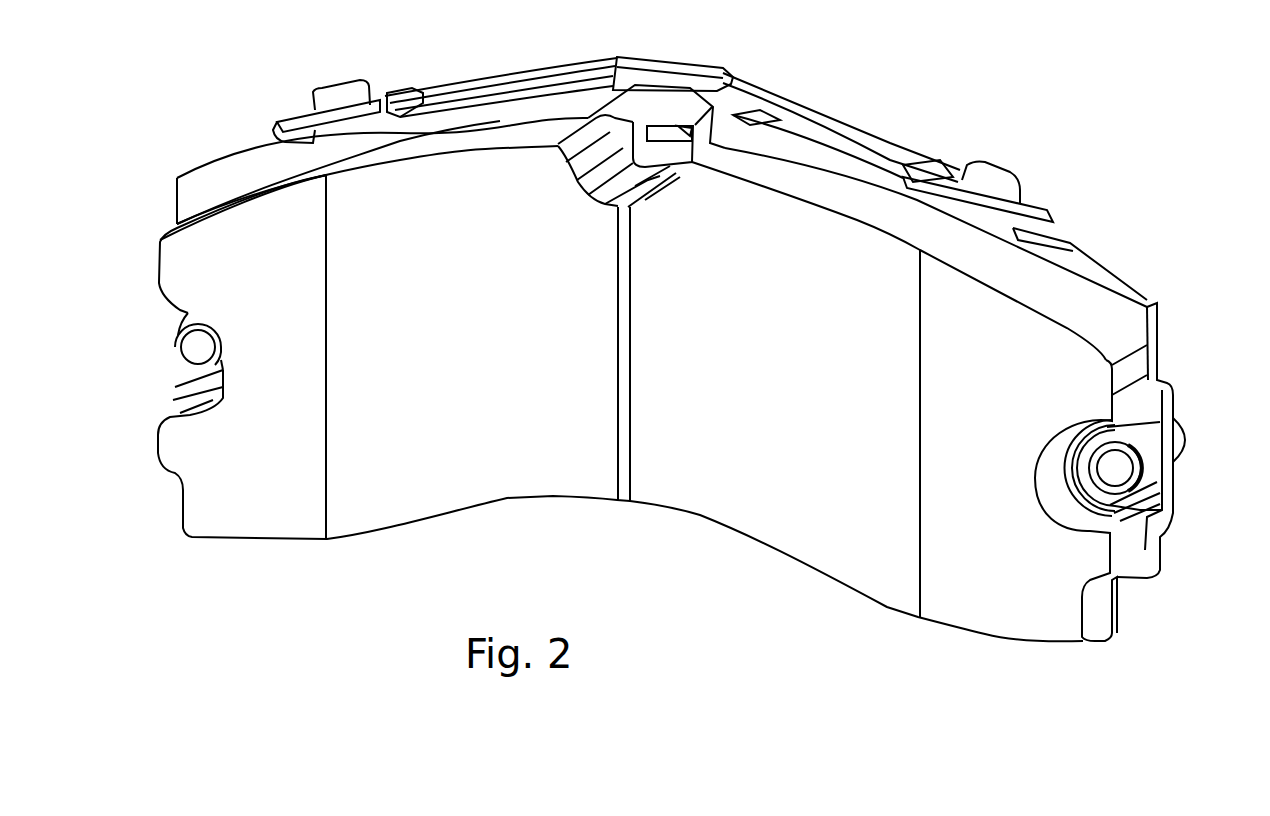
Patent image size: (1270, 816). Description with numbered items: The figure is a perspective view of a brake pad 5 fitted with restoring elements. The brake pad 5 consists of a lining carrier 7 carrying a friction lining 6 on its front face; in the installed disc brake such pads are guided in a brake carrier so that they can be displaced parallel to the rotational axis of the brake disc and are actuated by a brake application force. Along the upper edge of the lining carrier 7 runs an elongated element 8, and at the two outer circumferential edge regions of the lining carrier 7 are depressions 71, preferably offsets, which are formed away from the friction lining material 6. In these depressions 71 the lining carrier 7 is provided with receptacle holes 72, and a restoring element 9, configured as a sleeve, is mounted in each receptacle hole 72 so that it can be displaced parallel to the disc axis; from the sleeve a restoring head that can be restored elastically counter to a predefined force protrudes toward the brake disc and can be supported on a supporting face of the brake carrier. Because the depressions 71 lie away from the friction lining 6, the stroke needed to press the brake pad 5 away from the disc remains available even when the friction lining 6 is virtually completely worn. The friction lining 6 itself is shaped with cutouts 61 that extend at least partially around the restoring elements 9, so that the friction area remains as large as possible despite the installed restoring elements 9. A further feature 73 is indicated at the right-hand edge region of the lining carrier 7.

The brake pad 5 is at (287, 580).
The friction lining 6 is at (787, 497).
The lining carrier 7 is at (1077, 270).
The spring 8 is at (852, 138).
The restoring element 9 is at (170, 352).
The cutout 61 is at (197, 397).
The depression 71 is at (1157, 443).
The receptacle hole 72 is at (1152, 420).
The boss 73 is at (1155, 340).